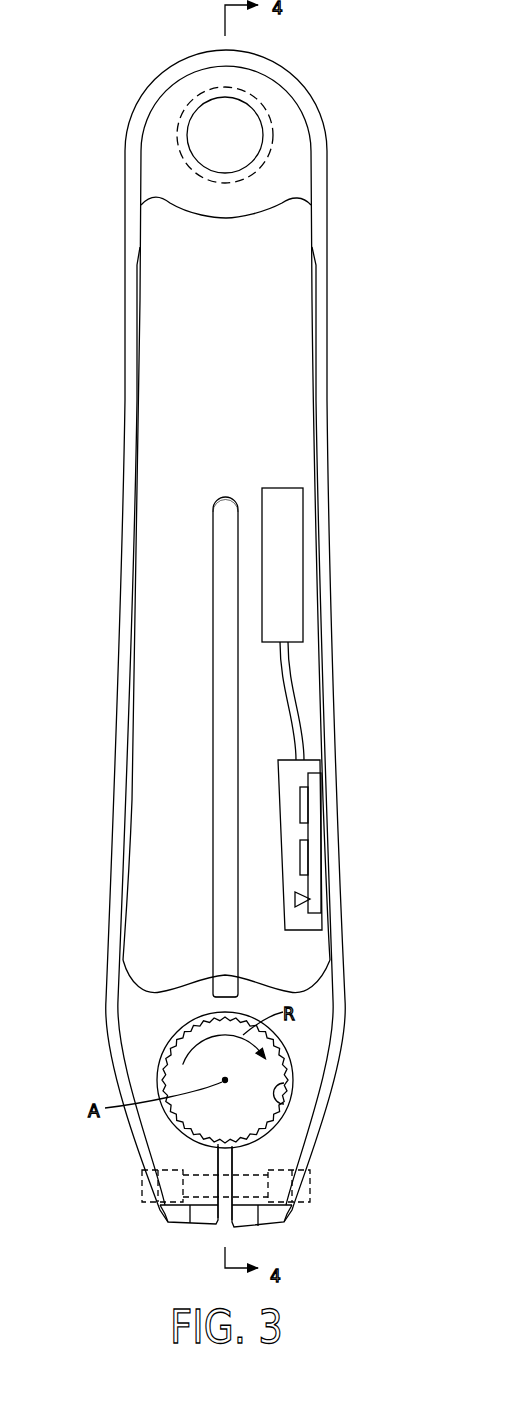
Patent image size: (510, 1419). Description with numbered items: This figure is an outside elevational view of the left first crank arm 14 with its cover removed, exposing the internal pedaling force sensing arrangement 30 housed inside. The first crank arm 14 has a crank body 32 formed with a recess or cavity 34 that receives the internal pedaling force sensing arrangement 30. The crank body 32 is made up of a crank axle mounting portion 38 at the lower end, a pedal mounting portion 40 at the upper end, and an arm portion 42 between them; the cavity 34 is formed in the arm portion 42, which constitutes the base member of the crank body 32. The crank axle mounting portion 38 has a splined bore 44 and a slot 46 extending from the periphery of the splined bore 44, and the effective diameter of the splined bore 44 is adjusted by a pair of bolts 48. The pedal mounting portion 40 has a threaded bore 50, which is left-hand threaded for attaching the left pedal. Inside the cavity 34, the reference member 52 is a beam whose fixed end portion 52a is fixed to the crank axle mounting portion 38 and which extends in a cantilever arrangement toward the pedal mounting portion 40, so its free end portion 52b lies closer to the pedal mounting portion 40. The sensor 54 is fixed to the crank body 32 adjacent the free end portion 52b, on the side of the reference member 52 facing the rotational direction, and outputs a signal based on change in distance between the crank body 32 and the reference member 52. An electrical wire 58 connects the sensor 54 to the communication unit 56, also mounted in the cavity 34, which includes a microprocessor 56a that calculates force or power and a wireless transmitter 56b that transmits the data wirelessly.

The first crank arm 14 is at (361, 144).
The internal pedaling force sensing arrangement 30 is at (162, 706).
The crank body 32 is at (115, 411).
The cavity 34 is at (263, 312).
The crank axle mounting portion 38 is at (163, 1022).
The pedal mounting portion 40 is at (160, 176).
The arm portion 42 is at (125, 497).
The splined bore 44 is at (285, 1113).
The slot 46 is at (230, 1158).
The bolts 48 is at (190, 1226).
The threaded bore 50 is at (186, 133).
The reference member 52 is at (212, 592).
The fixed end portion 52a is at (225, 982).
The free end portion 52b is at (212, 513).
The sensor 54 is at (280, 488).
The communication unit 56 is at (327, 830).
The microprocessor 56a is at (318, 883).
The wireless transmitter 56b is at (293, 900).
The electrical wire 58 is at (293, 697).